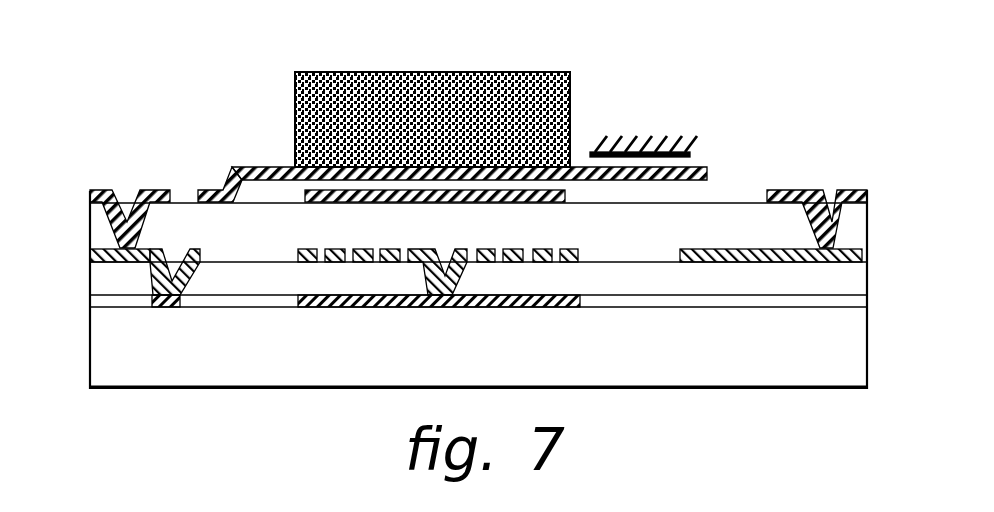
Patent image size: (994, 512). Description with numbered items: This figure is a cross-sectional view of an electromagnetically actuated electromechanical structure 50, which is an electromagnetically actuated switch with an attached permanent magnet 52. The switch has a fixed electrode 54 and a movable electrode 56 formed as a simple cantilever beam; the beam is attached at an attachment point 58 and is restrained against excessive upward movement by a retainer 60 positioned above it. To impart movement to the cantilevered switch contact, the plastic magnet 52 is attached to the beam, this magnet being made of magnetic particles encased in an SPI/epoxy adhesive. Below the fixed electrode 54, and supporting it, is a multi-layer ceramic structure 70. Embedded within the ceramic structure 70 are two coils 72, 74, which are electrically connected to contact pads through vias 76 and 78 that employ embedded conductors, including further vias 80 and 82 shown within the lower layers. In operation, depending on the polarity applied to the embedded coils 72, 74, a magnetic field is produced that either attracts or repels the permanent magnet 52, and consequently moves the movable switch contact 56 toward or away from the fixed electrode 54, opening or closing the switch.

The electromagnetically actuated electromechanical structure 50 is at (726, 92).
The permanent magnet 52 is at (465, 72).
The fixed electrode 54 is at (566, 197).
The movable electrode 56 is at (708, 171).
The attachment point 58 is at (227, 188).
The retainer 60 is at (654, 150).
The multi-layer ceramic structure 70 is at (467, 360).
The embedded coil 72 is at (570, 307).
The embedded coil 74 is at (300, 262).
The via 76 is at (118, 216).
The via 78 is at (867, 189).
The via 80 is at (156, 259).
The via 82 is at (433, 260).